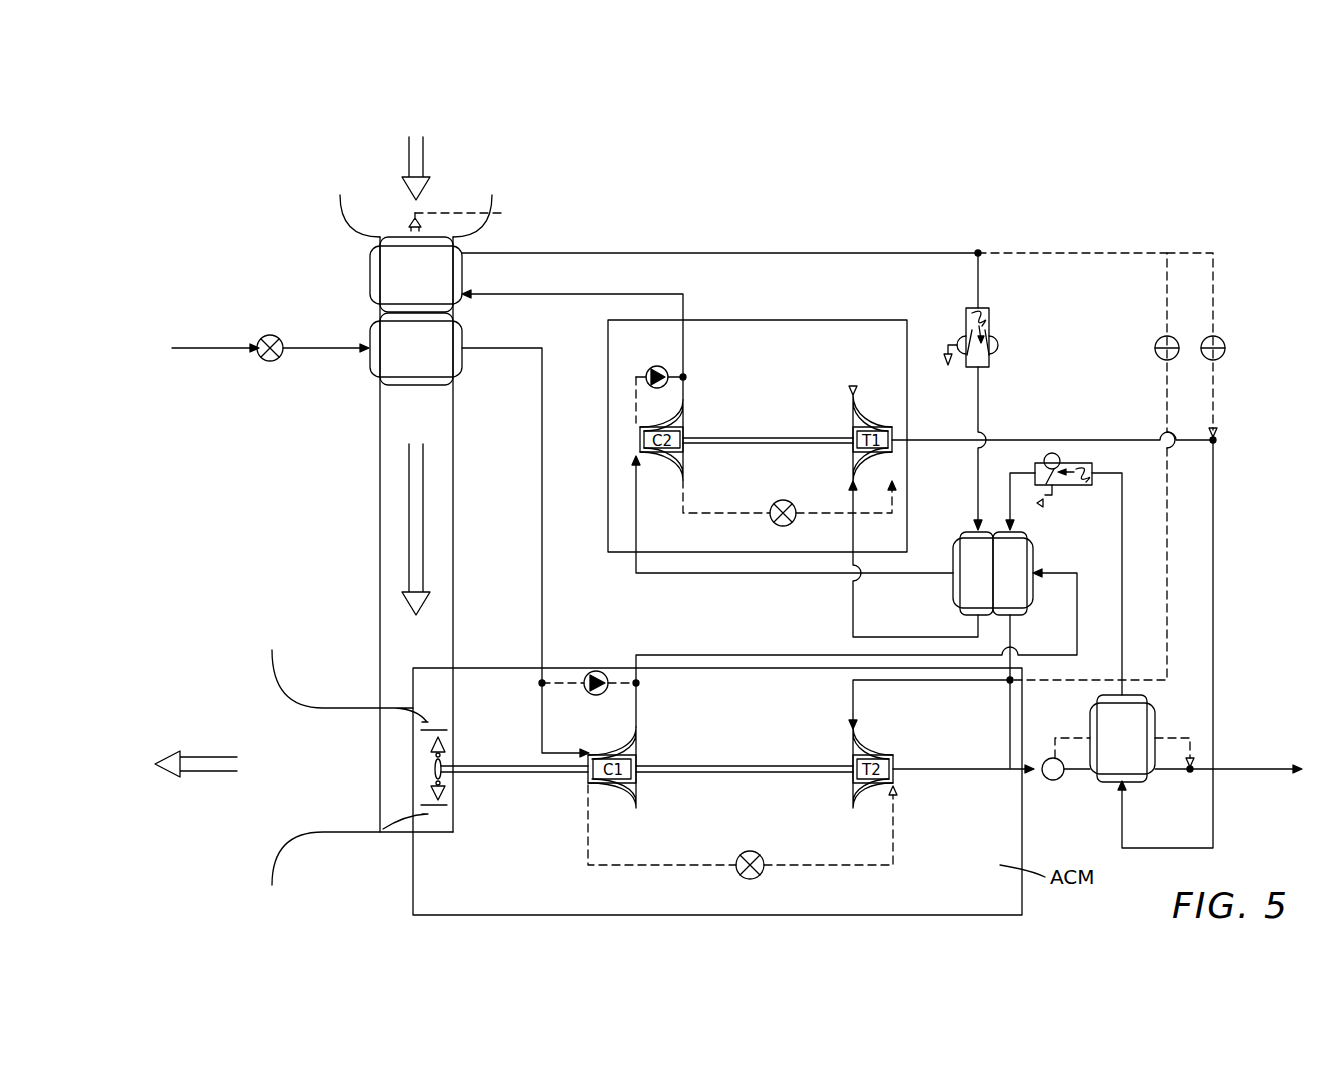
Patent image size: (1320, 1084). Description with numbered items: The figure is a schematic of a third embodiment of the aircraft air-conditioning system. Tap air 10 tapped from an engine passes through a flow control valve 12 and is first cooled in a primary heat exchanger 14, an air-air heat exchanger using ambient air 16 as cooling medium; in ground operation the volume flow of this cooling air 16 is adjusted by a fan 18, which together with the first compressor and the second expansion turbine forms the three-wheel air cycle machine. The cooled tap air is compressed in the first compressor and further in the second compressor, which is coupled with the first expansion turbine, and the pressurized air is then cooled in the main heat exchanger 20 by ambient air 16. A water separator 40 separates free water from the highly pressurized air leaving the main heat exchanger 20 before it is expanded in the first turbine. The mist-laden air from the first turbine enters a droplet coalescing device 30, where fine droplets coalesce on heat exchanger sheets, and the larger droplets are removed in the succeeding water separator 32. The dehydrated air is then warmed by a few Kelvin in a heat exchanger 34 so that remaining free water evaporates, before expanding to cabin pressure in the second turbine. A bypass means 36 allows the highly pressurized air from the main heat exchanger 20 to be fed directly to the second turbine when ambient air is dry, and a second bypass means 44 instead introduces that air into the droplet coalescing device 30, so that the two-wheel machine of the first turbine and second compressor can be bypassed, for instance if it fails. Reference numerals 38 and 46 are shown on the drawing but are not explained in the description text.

The tap air 10 is at (258, 349).
The flow control valve 12 is at (270, 335).
The primary heat exchanger 14 is at (416, 349).
The ambient air 16 is at (423, 155).
The fan 18 is at (430, 780).
The main heat exchanger 20 is at (437, 262).
The droplet coalescing device 30 is at (1196, 644).
The water separator 32 is at (1078, 487).
The heat exchanger 34 is at (856, 650).
The bypass means 36 is at (1167, 302).
The condenser heat exchanger 38 is at (993, 573).
The water separator 40 is at (990, 326).
The second bypass means 44 is at (1213, 378).
The sensor 46 is at (1073, 740).